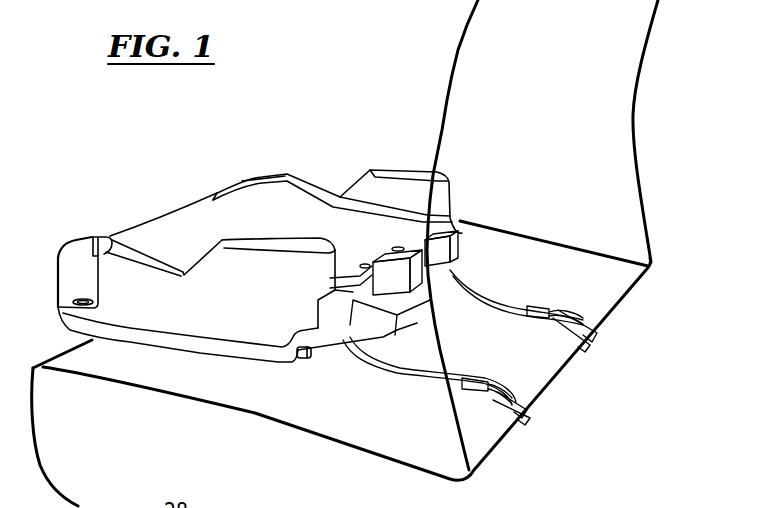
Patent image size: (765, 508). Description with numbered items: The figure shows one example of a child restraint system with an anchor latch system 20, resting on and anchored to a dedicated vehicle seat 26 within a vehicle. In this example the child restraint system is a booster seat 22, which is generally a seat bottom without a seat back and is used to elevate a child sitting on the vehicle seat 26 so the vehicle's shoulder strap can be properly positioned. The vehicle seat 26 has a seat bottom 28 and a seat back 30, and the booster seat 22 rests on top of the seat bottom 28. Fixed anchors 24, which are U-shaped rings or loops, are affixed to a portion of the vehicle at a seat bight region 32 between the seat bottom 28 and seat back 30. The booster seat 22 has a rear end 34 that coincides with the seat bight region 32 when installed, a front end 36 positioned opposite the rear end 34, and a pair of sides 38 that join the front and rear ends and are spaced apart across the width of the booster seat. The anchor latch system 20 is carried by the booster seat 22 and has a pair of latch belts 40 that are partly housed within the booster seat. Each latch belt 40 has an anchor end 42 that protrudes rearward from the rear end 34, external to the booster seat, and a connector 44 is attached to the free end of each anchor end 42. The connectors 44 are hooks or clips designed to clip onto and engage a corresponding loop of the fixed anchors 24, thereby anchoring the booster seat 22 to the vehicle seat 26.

The anchor latch system 20 is at (352, 375).
The booster seat 22 is at (358, 339).
The fixed anchors 24 is at (592, 345).
The vehicle seat 26 is at (368, 254).
The seat bottom 28 is at (341, 364).
The seat back 30 is at (600, 77).
The seat bight region 32 is at (454, 462).
The rear end 34 is at (433, 300).
The front end 36 is at (110, 236).
The sides 38 is at (150, 302).
The latch belts 40 is at (490, 298).
The anchor end 42 is at (553, 300).
The connector 44 is at (590, 315).